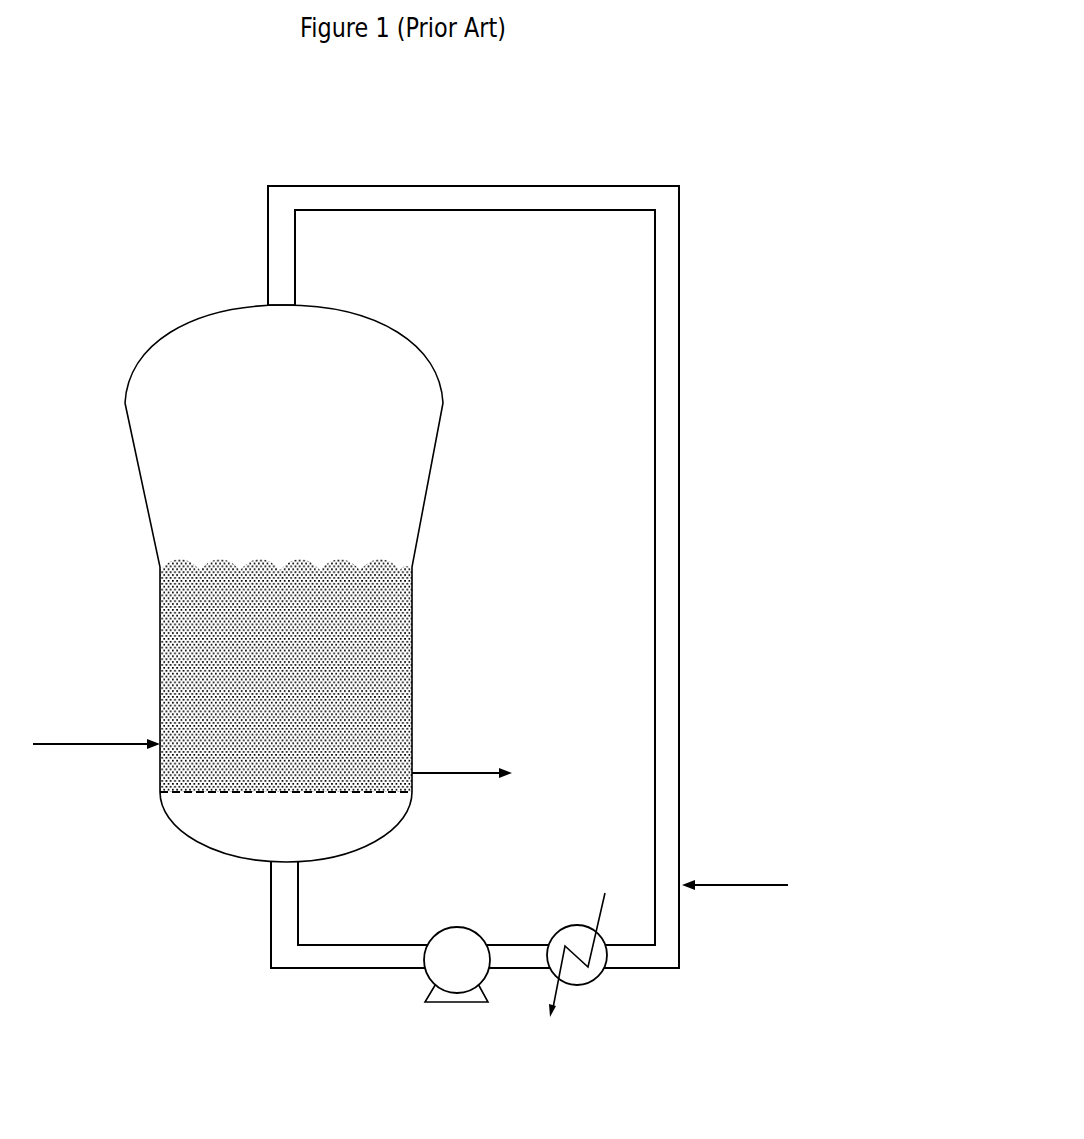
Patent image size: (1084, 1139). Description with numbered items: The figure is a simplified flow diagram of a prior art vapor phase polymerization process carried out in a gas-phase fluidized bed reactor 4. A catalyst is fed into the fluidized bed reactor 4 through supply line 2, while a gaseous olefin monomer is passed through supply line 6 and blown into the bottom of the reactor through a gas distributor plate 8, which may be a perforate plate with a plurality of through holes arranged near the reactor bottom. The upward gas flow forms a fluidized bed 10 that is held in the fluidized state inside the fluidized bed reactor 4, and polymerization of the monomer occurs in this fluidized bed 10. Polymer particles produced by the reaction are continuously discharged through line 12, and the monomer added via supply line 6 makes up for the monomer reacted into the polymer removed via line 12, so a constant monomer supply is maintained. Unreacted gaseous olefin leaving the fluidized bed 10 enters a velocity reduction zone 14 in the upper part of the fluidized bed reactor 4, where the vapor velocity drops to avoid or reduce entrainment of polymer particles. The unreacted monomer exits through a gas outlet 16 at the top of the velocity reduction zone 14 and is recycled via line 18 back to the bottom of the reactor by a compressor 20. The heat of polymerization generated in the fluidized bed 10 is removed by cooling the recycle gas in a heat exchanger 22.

The supply line 2 is at (87, 747).
The fluidized bed reactor 4 is at (277, 583).
The supply line 6 is at (528, 616).
The gas distributor plate 8 is at (337, 795).
The fluidized bed 10 is at (286, 675).
The line 12 is at (482, 776).
The velocity reduction zone 14 is at (284, 364).
The gas outlet 16 is at (265, 298).
The line 18 is at (400, 212).
The compressor 20 is at (460, 1003).
The heat exchanger 22 is at (575, 987).